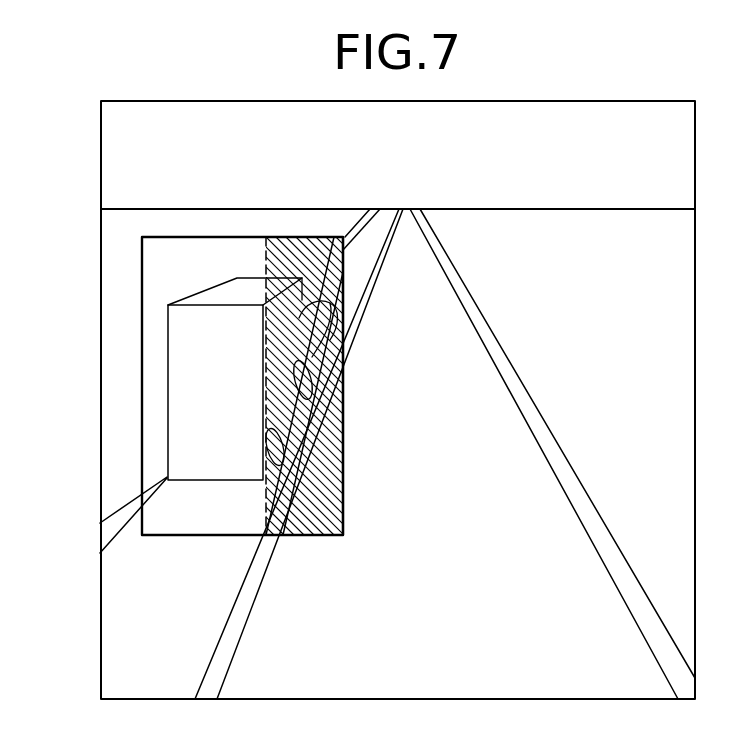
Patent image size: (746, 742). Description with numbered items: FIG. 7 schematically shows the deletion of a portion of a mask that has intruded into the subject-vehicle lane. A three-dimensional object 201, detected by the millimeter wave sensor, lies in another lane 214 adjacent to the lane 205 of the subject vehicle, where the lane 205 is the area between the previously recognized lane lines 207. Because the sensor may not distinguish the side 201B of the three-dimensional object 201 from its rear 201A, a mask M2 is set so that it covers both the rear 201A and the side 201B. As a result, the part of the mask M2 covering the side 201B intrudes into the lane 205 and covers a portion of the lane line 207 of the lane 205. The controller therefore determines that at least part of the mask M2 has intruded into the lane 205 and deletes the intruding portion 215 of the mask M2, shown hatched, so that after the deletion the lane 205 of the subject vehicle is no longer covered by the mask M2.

The mask M2 is at (233, 237).
The three-dimensional object 201 is at (231, 408).
The rear 201A is at (202, 392).
The side 201B is at (305, 318).
The lane 205 is at (437, 383).
The lane line 207 is at (232, 648).
The lane 214 is at (155, 612).
The portion 215 is at (267, 540).